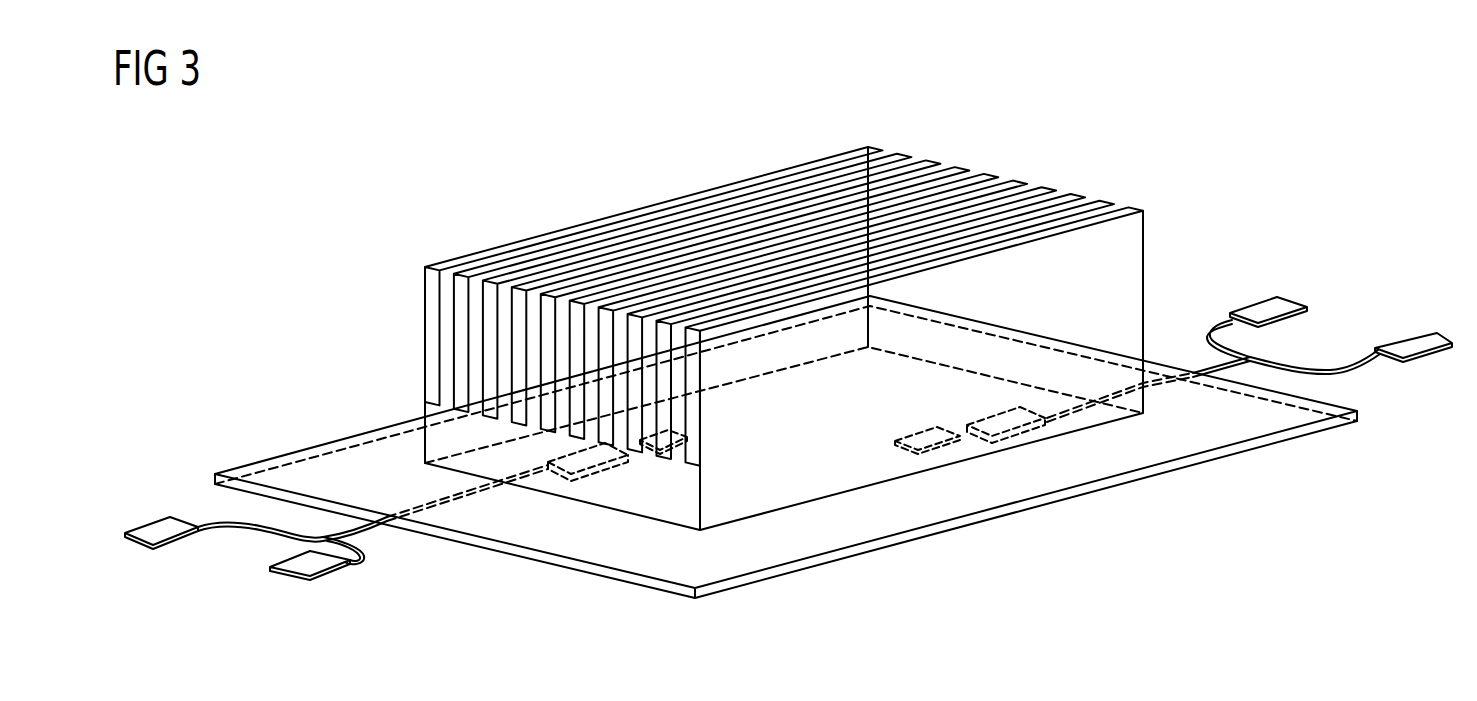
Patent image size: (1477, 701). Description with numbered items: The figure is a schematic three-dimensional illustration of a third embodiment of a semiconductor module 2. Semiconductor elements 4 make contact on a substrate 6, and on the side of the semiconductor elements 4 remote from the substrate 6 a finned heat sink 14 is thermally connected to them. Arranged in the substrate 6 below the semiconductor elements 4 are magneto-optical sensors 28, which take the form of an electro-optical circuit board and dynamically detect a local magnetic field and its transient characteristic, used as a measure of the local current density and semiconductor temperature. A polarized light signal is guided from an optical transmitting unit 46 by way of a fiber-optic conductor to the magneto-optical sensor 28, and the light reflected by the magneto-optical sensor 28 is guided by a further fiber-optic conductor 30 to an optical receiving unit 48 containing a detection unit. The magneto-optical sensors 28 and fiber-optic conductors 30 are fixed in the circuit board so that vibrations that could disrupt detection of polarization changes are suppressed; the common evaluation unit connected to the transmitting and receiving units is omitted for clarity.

The semiconductor module 2 is at (1196, 147).
The semiconductor elements 4 is at (645, 452).
The substrate 6 is at (298, 473).
The heat sink 14 is at (428, 309).
The magneto-optical sensors 28 is at (580, 478).
The fiber-optic conductor 30 is at (226, 540).
The optical transmitting unit 46 is at (1412, 345).
The optical receiving unit 48 is at (165, 515).